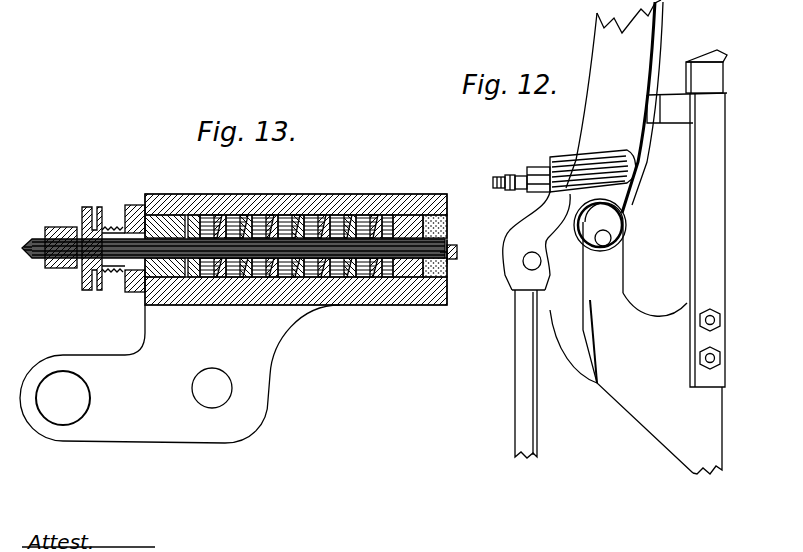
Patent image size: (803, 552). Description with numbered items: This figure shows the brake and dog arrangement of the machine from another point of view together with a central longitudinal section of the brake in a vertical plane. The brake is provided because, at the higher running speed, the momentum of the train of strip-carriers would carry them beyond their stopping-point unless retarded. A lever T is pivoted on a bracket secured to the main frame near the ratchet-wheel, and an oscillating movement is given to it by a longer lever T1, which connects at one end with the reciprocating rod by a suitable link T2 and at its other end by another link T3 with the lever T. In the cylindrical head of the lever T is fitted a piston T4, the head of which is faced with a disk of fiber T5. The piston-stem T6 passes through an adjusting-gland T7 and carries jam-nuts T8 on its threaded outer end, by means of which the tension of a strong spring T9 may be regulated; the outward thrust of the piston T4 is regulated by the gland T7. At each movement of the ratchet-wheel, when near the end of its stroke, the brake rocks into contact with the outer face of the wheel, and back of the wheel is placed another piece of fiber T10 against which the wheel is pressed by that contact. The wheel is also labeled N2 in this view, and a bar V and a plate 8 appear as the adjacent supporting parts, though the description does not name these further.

In FIG. 13, the lever T is at (335, 306).
In FIG. 12, the longer lever T1 is at (545, 206).
In FIG. 12, the link T2 is at (553, 166).
In FIG. 12, the link T3 is at (520, 338).
In FIG. 13, the piston T4 is at (390, 206).
In FIG. 13, the disk of fiber T5 is at (452, 243).
In FIG. 13, the piston-stem T6 is at (118, 226).
In FIG. 12, the piston-stem T6 is at (493, 184).
In FIG. 13, the adjusting-gland T7 is at (146, 207).
In FIG. 12, the adjusting-gland T7 is at (512, 178).
In FIG. 13, the jam-nuts T8 is at (64, 232).
In FIG. 13, the strong spring T9 is at (257, 206).
In FIG. 12, the piece of fiber T10 is at (692, 55).
In FIG. 12, the curved arm N2 is at (623, 88).
In FIG. 12, the bar V is at (718, 150).
In FIG. 12, the plate 8 is at (652, 348).